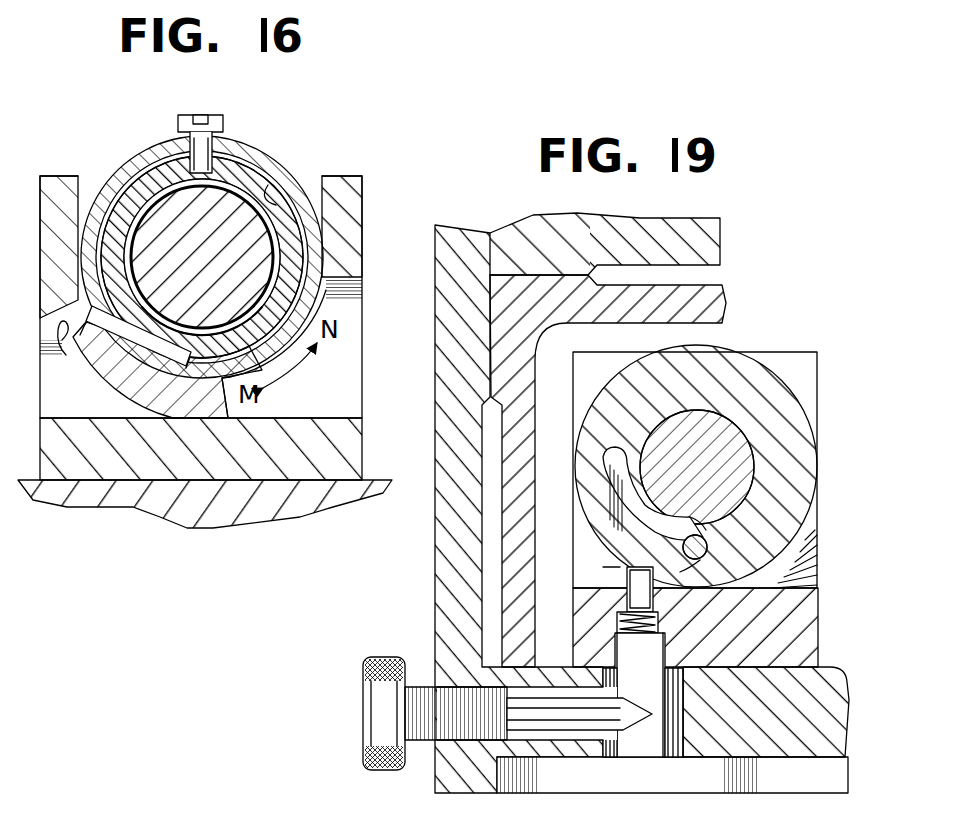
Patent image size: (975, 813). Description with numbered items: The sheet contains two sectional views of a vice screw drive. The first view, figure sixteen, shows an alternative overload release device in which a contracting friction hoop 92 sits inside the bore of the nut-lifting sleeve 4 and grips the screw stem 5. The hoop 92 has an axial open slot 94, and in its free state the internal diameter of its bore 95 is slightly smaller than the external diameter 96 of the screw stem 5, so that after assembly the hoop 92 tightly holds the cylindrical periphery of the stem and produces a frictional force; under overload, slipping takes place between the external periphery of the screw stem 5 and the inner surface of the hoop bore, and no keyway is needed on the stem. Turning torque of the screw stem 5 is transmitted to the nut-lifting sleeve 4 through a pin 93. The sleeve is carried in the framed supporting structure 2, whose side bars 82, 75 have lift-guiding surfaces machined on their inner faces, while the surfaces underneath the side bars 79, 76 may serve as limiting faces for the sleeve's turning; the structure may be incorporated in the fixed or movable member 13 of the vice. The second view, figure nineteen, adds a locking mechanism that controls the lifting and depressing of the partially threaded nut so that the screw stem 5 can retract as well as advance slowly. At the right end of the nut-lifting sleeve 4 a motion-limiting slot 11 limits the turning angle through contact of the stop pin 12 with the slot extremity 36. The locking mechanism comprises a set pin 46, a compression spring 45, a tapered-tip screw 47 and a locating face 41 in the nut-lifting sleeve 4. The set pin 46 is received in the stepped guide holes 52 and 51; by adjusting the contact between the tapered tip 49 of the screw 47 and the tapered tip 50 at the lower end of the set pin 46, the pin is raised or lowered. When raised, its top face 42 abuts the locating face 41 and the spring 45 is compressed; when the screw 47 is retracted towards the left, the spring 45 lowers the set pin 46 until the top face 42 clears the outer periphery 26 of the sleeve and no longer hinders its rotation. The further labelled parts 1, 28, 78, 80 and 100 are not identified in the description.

In FIG. 19, the frame member 1 is at (710, 303).
In FIG. 16, the supporting structure 2 is at (345, 375).
In FIG. 19, the supporting structure 2 is at (767, 648).
In FIG. 16, the nut-lifting sleeve 4 is at (233, 173).
In FIG. 19, the nut-lifting sleeve 4 is at (740, 370).
In FIG. 16, the screw stem 5 is at (184, 279).
In FIG. 19, the screw stem 5 is at (717, 440).
In FIG. 19, the motion-limiting slot 11 is at (620, 453).
In FIG. 19, the stop pin 12 is at (702, 515).
In FIG. 16, the fixed or movable member of the vice 13 is at (97, 503).
In FIG. 19, the fixed or movable member of the vice 13 is at (440, 583).
In FIG. 19, the outer periphery of the nut-lifting sleeve 26 is at (785, 375).
In FIG. 19, the key recess 28 is at (650, 495).
In FIG. 19, the extremity of the motion-limiting slot 36 is at (707, 546).
In FIG. 19, the locating face 41 is at (697, 572).
In FIG. 19, the top face of the set pin 42 is at (623, 565).
In FIG. 19, the compression spring 45 is at (655, 600).
In FIG. 19, the set pin 46 is at (662, 645).
In FIG. 19, the tapered-tip screw 47 is at (365, 700).
In FIG. 19, the tapered tip of the screw 49 is at (633, 757).
In FIG. 19, the tapered tip of the set pin 50 is at (680, 730).
In FIG. 19, the stepped guide hole 51 is at (668, 705).
In FIG. 19, the stepped guide hole 52 is at (627, 593).
In FIG. 16, the side bar 75 is at (348, 208).
In FIG. 16, the side bar 76 is at (358, 302).
In FIG. 16, the base portion 78 is at (230, 407).
In FIG. 16, the side bar 79 is at (72, 345).
In FIG. 16, the serrated notch 80 is at (61, 362).
In FIG. 16, the side bar 82 is at (62, 185).
In FIG. 16, the contracting friction hoop 92 is at (152, 172).
In FIG. 16, the pin 93 is at (213, 112).
In FIG. 16, the axial open slot 94 is at (273, 198).
In FIG. 16, the bore of the hoop 95 is at (133, 220).
In FIG. 16, the external diameter of the screw stem 96 is at (187, 340).
In FIG. 16, the assembly 100 is at (246, 806).